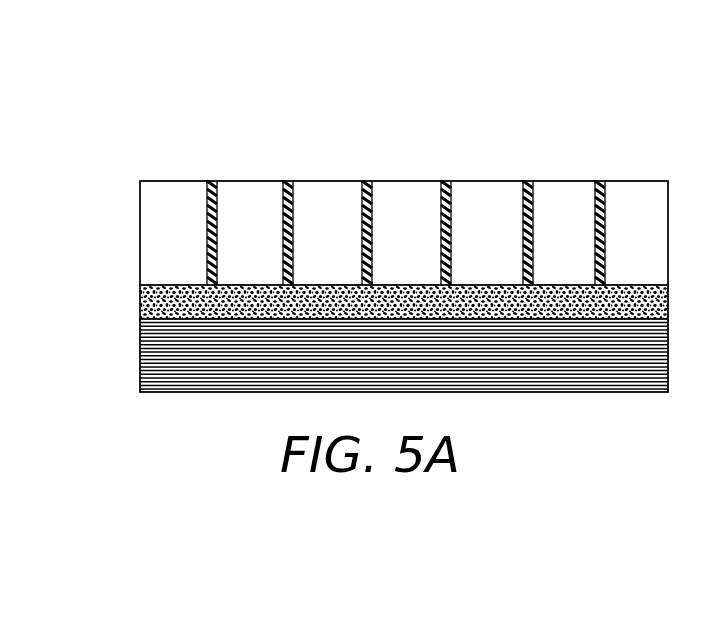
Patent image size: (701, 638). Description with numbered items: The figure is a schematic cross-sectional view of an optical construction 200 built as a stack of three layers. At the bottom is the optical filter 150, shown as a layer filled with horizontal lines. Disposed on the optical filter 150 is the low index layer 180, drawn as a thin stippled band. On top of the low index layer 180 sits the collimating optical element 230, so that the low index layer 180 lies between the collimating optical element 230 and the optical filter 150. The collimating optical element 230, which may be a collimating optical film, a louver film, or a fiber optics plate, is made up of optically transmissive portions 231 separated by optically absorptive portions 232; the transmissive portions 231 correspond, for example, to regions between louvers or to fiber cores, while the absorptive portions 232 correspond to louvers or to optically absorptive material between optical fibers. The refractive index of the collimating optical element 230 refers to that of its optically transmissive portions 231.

The optical construction 200 is at (170, 75).
The collimating optical element 230 is at (165, 218).
The optically transmissive portions 231 is at (491, 198).
The optically absorptive portions 232 is at (367, 181).
The low index layer 180 is at (153, 305).
The optical filter 150 is at (153, 363).